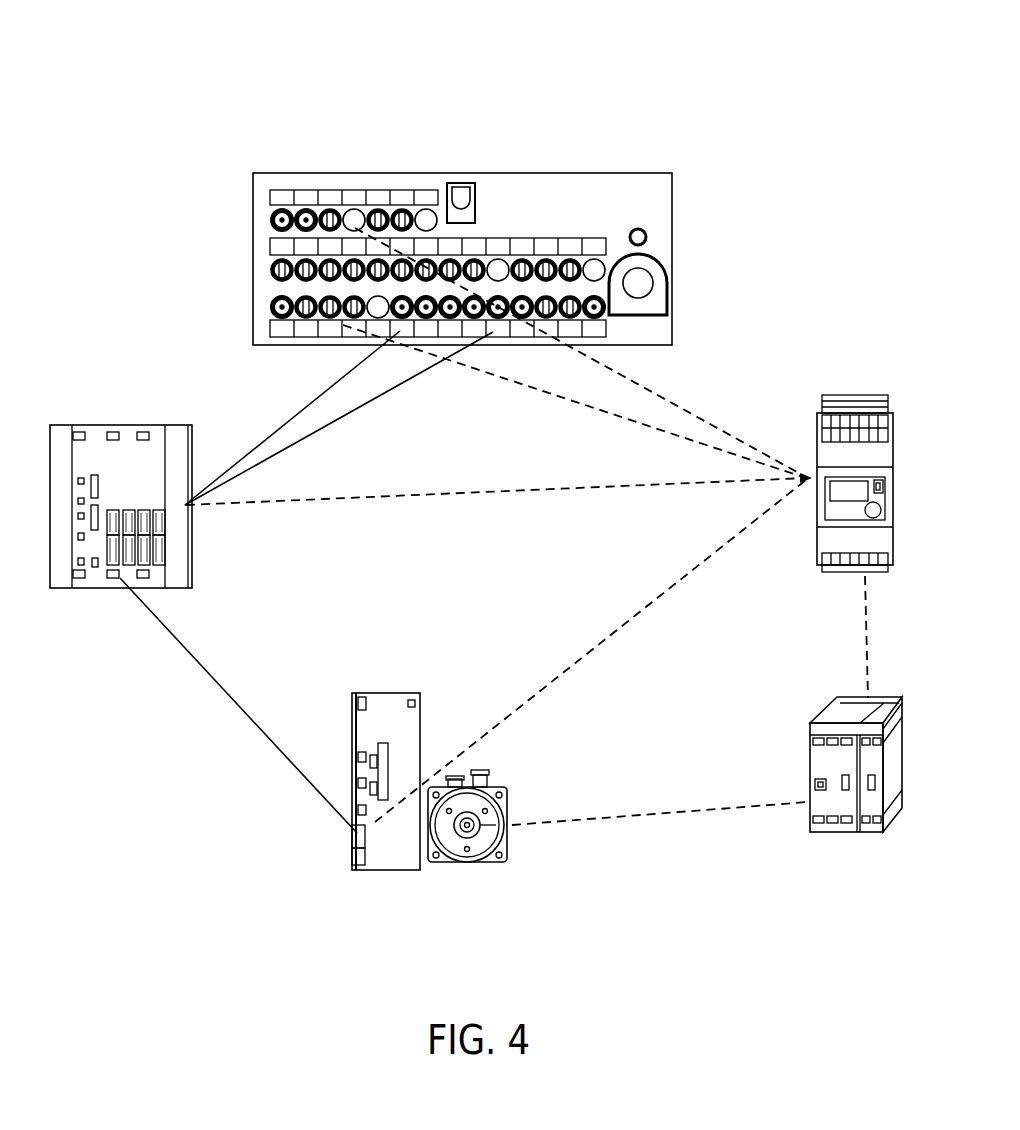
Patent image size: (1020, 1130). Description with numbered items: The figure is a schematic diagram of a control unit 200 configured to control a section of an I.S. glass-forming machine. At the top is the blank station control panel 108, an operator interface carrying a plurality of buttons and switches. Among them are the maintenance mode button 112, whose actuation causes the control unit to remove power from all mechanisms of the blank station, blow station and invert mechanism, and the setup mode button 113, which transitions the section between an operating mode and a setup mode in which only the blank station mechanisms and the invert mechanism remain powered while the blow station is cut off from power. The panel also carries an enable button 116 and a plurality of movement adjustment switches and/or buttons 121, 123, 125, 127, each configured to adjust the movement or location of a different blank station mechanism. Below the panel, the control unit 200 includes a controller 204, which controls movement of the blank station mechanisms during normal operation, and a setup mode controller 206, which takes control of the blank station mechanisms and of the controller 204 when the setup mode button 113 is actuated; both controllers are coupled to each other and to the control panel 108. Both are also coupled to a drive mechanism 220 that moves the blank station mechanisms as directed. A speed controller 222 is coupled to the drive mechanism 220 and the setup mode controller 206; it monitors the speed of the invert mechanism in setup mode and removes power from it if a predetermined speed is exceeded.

The control unit 200 is at (246, 80).
The blank station control panel 108 is at (567, 190).
The maintenance mode button 112 is at (641, 288).
The setup mode button 113 is at (326, 218).
The enable button 116 is at (277, 318).
The movement adjustment switch and/or button 121 is at (378, 218).
The movement adjustment switch and/or button 123 is at (274, 264).
The movement adjustment switch and/or button 125 is at (325, 283).
The movement adjustment switch and/or button 127 is at (372, 283).
The controller 204 is at (92, 590).
The setup mode controller 206 is at (815, 540).
The drive mechanism 220 is at (384, 891).
The speed controller 222 is at (830, 857).